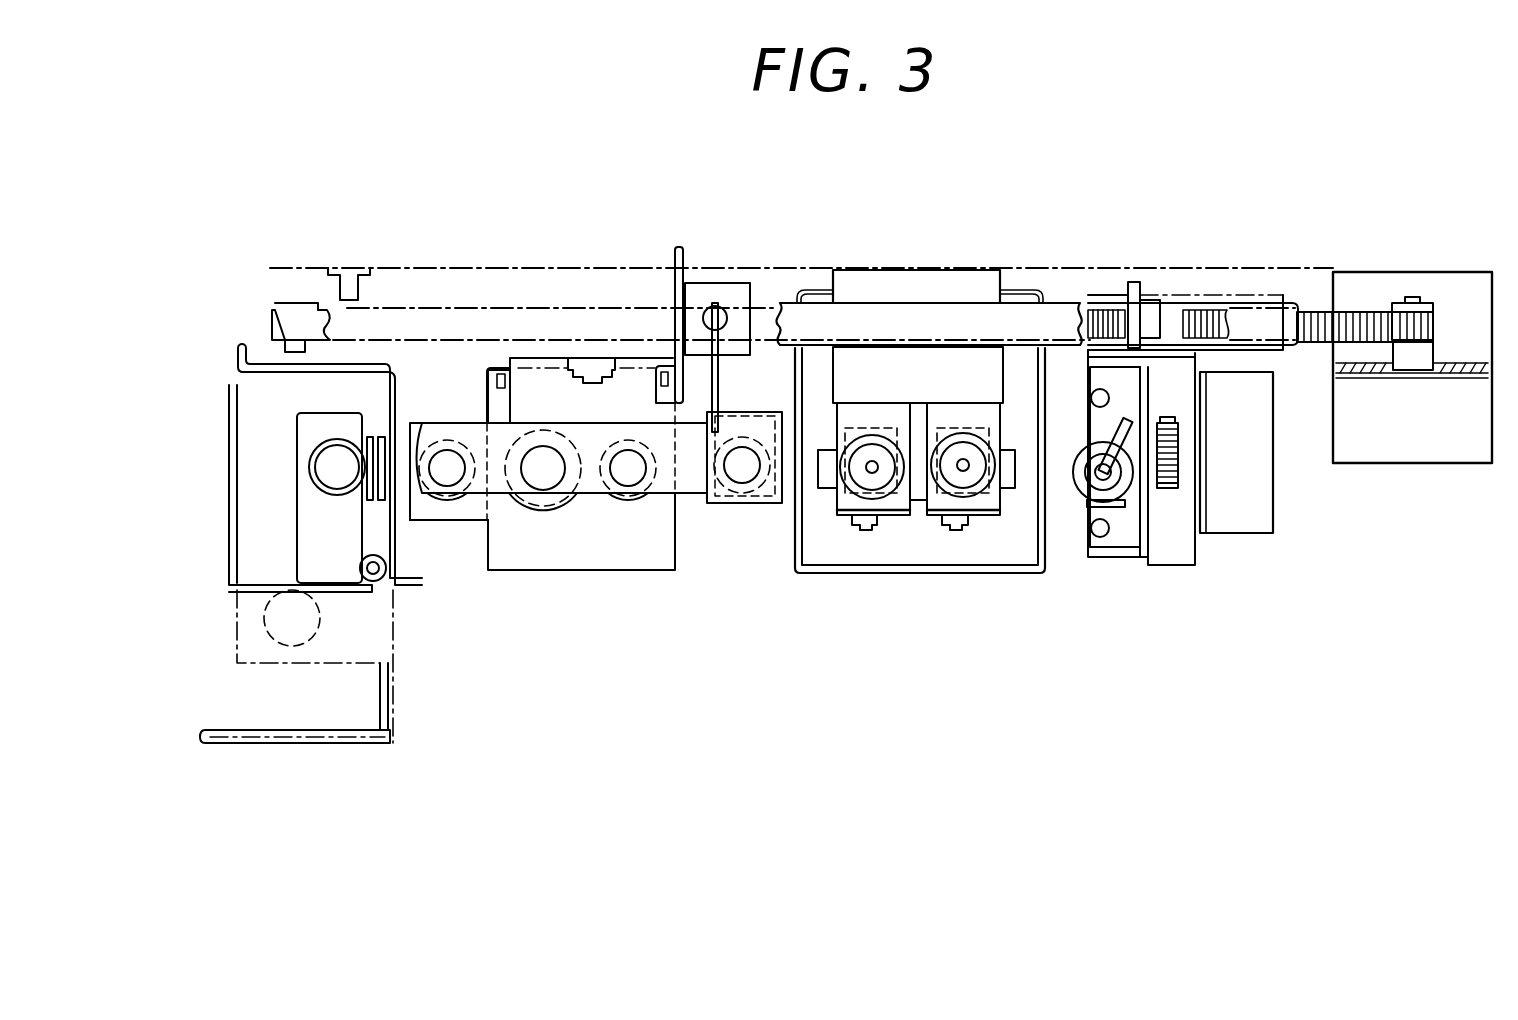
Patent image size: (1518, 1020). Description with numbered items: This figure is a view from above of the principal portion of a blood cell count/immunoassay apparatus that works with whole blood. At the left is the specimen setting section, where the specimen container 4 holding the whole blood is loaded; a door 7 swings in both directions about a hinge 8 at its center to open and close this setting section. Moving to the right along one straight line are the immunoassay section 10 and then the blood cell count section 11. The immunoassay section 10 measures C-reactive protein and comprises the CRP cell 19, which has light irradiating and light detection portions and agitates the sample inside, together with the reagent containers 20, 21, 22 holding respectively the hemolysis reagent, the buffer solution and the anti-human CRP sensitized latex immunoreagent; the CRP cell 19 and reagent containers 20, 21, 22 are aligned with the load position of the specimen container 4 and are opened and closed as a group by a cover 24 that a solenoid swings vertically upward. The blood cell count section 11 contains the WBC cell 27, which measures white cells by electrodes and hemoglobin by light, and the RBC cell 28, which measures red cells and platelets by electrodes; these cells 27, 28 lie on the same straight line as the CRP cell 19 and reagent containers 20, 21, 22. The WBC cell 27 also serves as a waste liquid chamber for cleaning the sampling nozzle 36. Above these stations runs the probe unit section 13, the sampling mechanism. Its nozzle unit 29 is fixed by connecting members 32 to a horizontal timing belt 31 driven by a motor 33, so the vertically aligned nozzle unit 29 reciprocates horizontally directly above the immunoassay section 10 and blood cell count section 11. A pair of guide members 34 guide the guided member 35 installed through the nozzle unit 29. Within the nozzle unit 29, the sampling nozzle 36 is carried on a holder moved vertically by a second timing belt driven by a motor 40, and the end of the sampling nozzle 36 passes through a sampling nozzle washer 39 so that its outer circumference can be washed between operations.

The specimen container 4 is at (300, 468).
The door 7 is at (223, 730).
The hinge 8 is at (381, 585).
The immunoassay section 10 is at (627, 583).
The blood cell count section 11 is at (888, 578).
The probe unit section 13 is at (1155, 573).
The CRP cell 19 is at (742, 505).
The reagent container 20 is at (442, 522).
The reagent container 21 is at (630, 503).
The reagent container 22 is at (543, 507).
The cover 24 is at (495, 500).
The WBC cell 27 is at (845, 522).
The RBC cell 28 is at (935, 520).
The nozzle unit 29 is at (1120, 560).
The timing belt 31 is at (1345, 308).
The connecting members 32 is at (1132, 283).
The motor 33 is at (1423, 464).
The guide members 34 is at (817, 312).
The guided member 35 is at (893, 285).
The sampling nozzle 36 is at (1087, 502).
The sampling nozzle washer 39 is at (1073, 467).
The motor 40 is at (1248, 535).